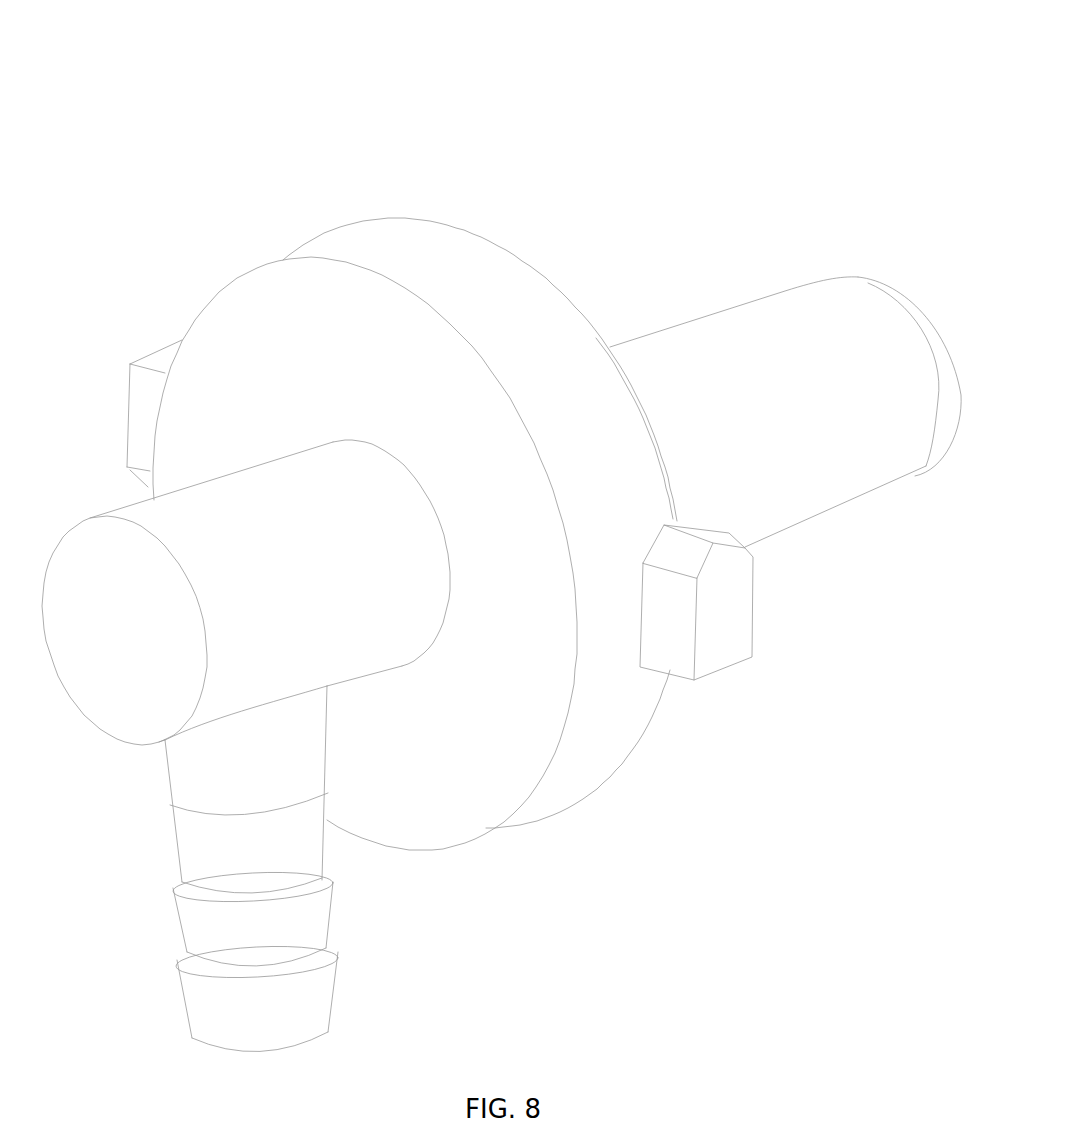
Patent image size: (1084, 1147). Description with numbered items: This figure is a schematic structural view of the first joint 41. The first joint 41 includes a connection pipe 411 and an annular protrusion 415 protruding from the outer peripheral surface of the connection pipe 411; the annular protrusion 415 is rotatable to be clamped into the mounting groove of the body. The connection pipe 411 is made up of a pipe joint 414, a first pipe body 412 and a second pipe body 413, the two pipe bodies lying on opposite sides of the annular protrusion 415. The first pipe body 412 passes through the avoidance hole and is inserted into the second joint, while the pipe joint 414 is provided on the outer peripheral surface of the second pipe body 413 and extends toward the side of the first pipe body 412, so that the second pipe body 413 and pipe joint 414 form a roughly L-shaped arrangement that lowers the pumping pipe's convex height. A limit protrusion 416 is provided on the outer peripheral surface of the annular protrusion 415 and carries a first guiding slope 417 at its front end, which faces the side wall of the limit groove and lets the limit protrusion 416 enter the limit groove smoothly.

The first joint 41 is at (588, 34).
The connection pipe 411 is at (268, 127).
The first pipe body 412 is at (727, 387).
The second pipe body 413 is at (232, 520).
The pipe joint 414 is at (288, 783).
The annular protrusion 415 is at (595, 710).
The limit protrusion 416 is at (784, 611).
The first guiding slope 417 is at (677, 555).